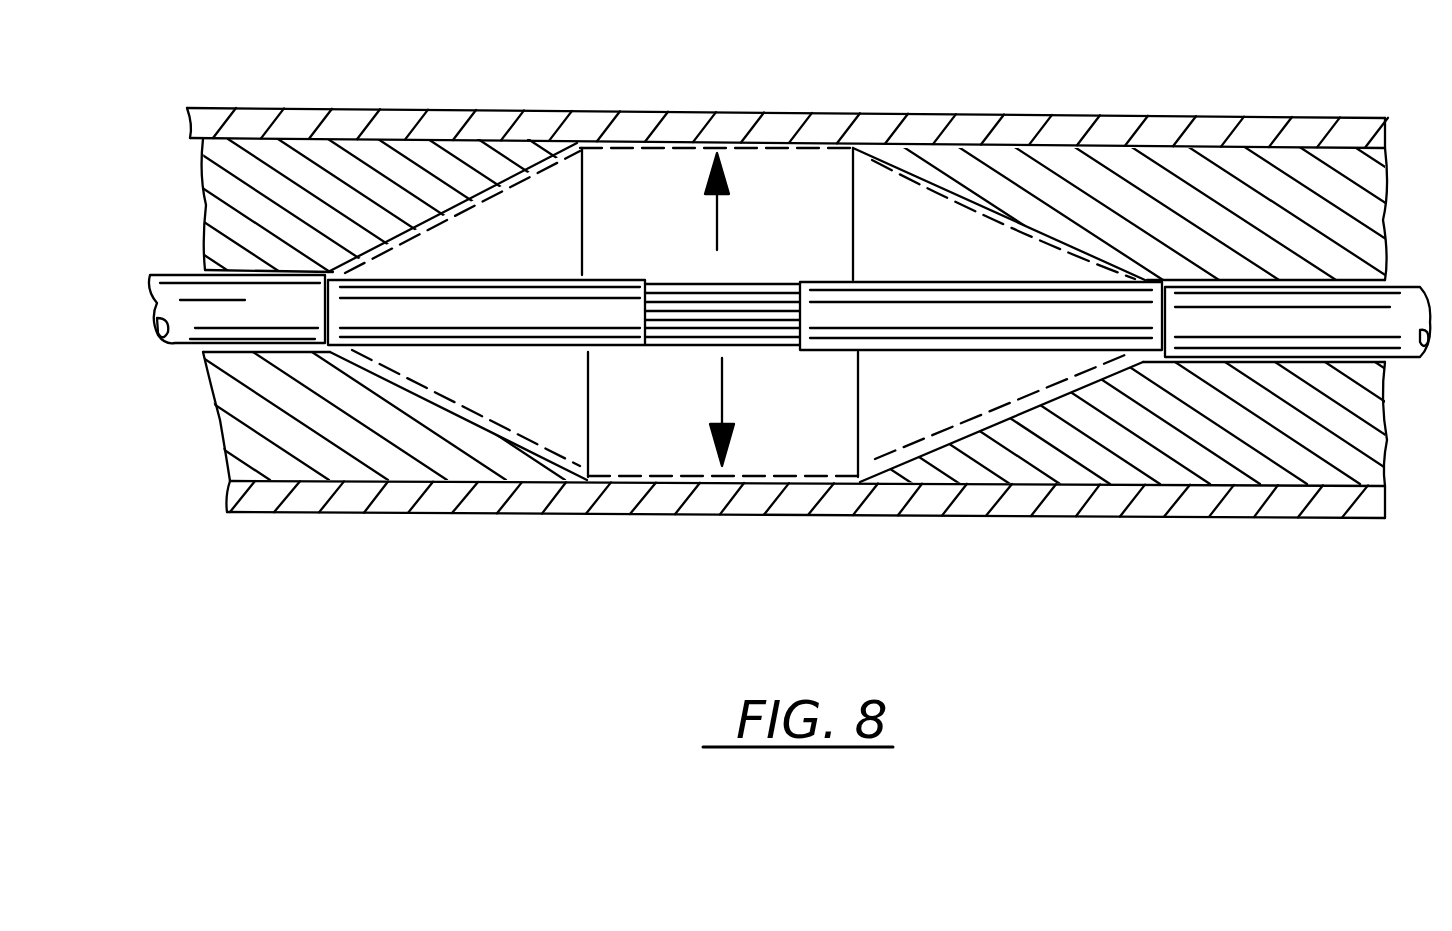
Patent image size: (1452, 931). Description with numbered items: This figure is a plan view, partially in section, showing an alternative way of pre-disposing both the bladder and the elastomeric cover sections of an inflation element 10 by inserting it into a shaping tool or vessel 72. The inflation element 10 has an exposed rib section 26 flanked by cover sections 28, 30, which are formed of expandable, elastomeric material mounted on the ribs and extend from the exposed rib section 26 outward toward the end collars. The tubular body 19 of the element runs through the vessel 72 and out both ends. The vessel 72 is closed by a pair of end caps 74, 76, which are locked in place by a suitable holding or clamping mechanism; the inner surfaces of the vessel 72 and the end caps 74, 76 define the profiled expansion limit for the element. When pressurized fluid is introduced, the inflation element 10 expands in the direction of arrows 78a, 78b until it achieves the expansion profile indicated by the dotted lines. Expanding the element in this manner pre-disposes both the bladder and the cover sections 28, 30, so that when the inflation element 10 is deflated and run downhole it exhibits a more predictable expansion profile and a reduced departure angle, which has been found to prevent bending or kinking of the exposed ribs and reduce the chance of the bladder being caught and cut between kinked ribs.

The inflation element 10 is at (605, 245).
The catheter tube 19 is at (1330, 320).
The exposed rib section 26 is at (760, 283).
The cover section 28 is at (478, 318).
The cover section 30 is at (978, 258).
The shaping tool or vessel 72 is at (488, 127).
The end cap 74 is at (300, 170).
The end cap 76 is at (1168, 192).
The arrow 78a is at (773, 215).
The arrow 78b is at (723, 392).